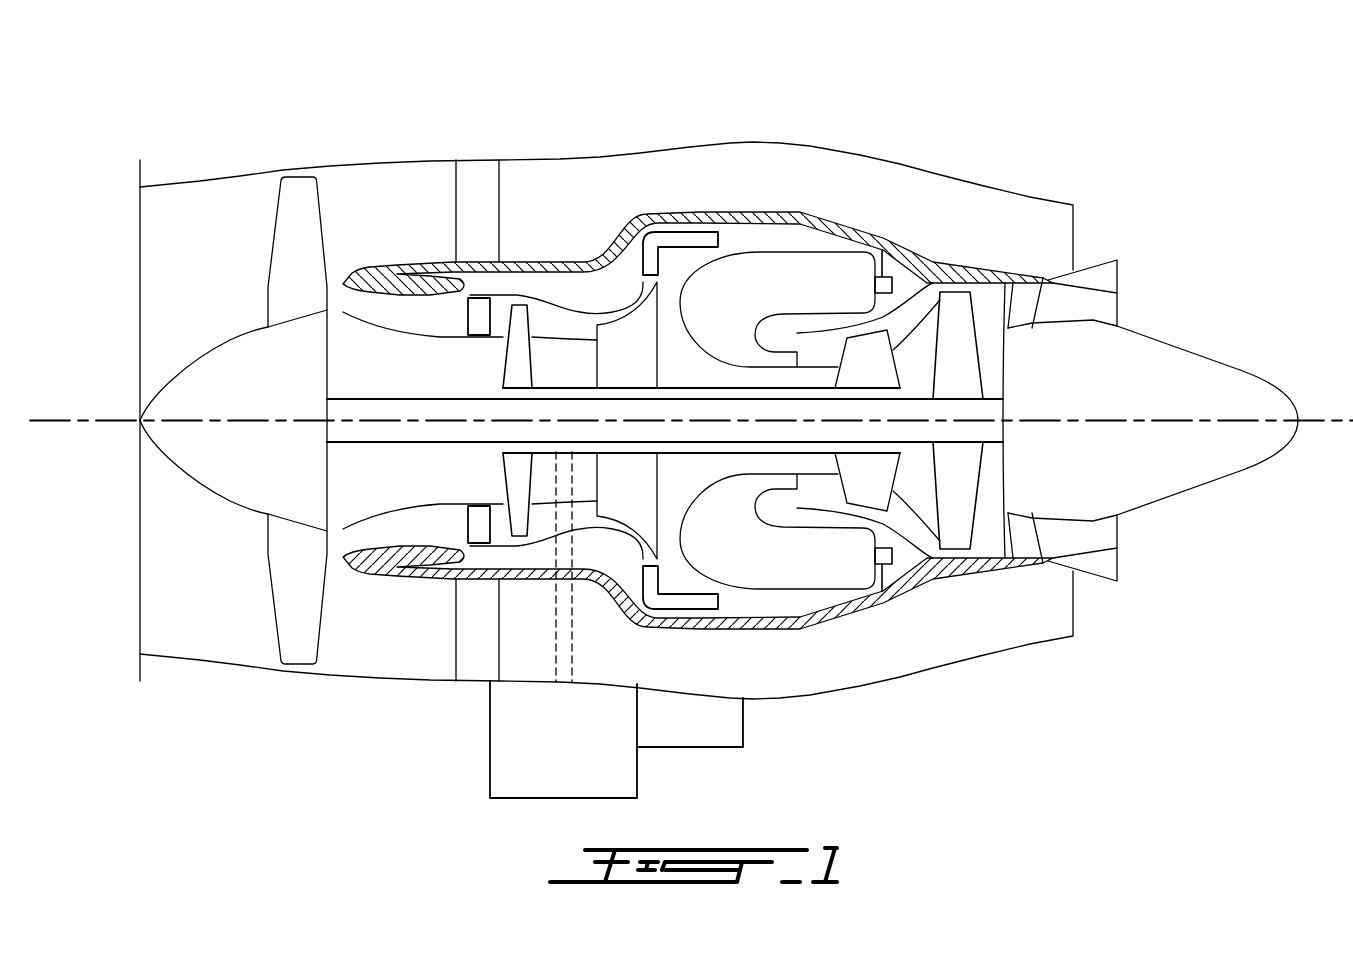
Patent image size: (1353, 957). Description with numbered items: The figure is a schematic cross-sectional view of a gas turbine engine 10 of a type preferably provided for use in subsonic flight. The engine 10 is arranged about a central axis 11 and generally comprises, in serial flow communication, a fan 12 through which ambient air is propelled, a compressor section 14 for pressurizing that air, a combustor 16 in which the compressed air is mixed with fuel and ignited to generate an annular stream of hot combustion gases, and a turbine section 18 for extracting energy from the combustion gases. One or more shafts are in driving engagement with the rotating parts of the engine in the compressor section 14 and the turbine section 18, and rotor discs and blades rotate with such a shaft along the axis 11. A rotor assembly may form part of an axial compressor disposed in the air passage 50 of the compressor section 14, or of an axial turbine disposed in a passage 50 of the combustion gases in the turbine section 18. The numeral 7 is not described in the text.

The gas turbine engine 10 is at (891, 132).
The axis 11 is at (1337, 420).
The fan 12 is at (293, 580).
The compressor section 14 is at (553, 318).
The combustor 16 is at (776, 275).
The turbine section 18 is at (915, 488).
The shaft 7 is at (817, 388).
The air passage 50 is at (552, 472).